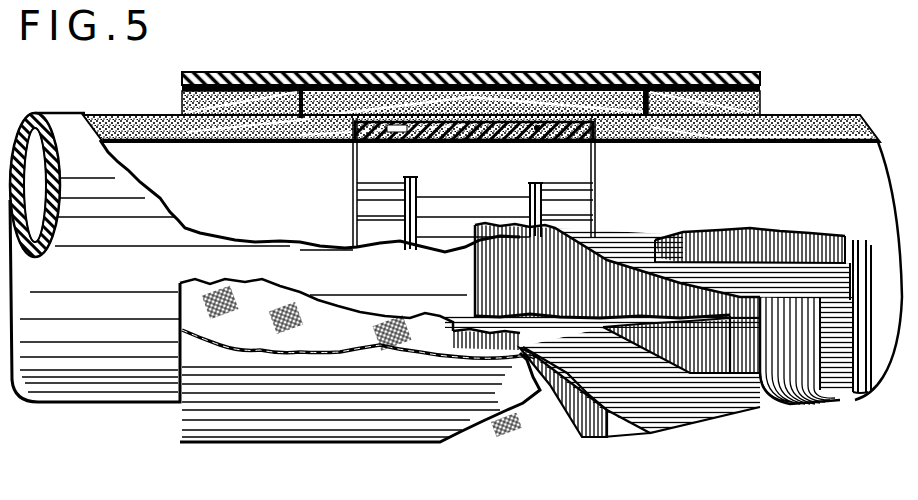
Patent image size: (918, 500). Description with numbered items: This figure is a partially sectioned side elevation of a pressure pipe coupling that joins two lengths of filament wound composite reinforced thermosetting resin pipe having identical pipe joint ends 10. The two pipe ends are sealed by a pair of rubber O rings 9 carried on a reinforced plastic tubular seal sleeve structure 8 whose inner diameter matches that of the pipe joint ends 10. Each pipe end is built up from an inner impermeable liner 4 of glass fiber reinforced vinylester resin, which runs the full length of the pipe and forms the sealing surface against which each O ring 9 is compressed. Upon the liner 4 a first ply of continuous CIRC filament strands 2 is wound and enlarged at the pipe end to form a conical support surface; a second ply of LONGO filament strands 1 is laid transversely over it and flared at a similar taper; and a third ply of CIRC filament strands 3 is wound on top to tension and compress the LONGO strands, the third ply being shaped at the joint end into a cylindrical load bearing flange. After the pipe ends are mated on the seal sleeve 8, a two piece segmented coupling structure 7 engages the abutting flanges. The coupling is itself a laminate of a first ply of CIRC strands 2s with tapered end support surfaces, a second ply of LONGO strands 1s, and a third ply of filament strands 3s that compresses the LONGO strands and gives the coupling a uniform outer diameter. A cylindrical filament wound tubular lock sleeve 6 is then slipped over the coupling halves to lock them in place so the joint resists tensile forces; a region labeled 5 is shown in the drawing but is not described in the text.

The LONGO filament strands 1 is at (228, 140).
The CIRC filament strands 2 is at (266, 140).
The third ply CIRC filament strands 3 is at (340, 141).
The inner impermeable liner 4 is at (815, 141).
The adhesive region 5 is at (535, 432).
The tubular lock sleeve 6 is at (410, 73).
The segmented coupling structure 7 is at (182, 108).
The tubular seal sleeve structure 8 is at (465, 141).
The rubber O ring 9 is at (542, 141).
The pipe joint ends 10 is at (118, 402).
The LONGO filament strands of segmented coupler 1s is at (762, 99).
The CIRC filament strands of segmented coupler 2s is at (722, 362).
The third ply filament strands of segmented coupler 3s is at (575, 432).